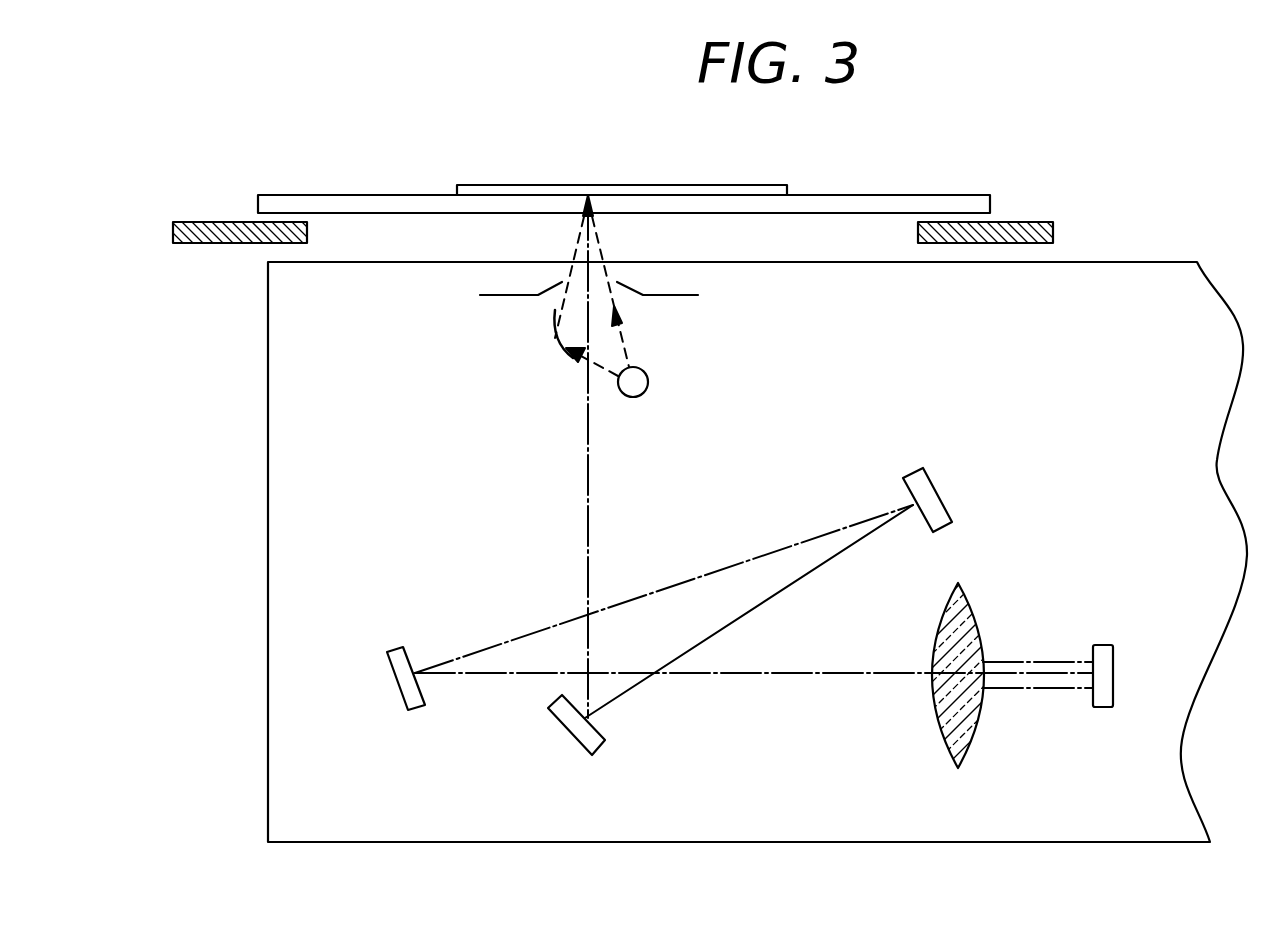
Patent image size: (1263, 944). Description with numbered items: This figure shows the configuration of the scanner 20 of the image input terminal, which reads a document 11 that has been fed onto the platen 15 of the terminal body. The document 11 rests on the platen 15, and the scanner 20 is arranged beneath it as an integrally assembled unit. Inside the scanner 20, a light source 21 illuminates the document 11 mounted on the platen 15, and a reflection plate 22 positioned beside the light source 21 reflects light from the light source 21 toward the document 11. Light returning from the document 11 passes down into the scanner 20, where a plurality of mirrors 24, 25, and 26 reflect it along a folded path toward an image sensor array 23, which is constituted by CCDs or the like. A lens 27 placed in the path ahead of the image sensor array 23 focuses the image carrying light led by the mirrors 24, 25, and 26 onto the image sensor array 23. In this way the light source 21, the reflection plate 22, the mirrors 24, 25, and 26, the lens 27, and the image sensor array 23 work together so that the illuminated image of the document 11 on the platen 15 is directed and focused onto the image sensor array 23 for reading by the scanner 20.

The document 11 is at (683, 185).
The platen 15 is at (360, 194).
The scanner 20 is at (256, 497).
The light source 21 is at (648, 383).
The reflection plate 22 is at (557, 352).
The image sensor array 23 is at (1100, 645).
The mirror 24 is at (570, 742).
The mirror 25 is at (958, 496).
The mirror 26 is at (390, 686).
The lens 27 is at (975, 741).